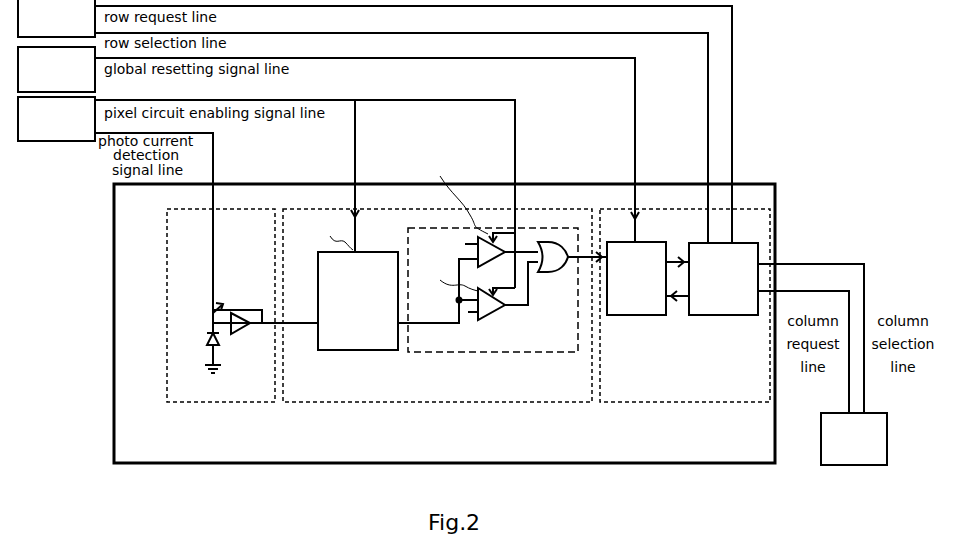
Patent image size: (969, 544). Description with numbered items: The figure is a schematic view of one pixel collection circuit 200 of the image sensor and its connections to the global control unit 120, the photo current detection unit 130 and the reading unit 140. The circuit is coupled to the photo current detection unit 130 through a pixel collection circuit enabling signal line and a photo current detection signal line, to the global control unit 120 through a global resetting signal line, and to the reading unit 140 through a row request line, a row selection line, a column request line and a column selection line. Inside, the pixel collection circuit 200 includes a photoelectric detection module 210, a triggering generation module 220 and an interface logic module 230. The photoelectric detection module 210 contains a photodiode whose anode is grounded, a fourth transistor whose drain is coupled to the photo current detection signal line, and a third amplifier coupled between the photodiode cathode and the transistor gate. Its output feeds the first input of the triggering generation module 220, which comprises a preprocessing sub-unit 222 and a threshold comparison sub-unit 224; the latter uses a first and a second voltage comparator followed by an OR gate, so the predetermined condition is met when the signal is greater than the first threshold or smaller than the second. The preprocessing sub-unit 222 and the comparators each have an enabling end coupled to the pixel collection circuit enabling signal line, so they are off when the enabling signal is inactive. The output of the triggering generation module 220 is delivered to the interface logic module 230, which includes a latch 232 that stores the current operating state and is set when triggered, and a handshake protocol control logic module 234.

The reading unit 140 is at (452, 232).
The global control unit 120 is at (56, 69).
The photo current detection unit 130 is at (56, 119).
The pixel collection circuit 200 is at (444, 323).
The photoelectric detection module 210 is at (242, 305).
The triggering generation module 220 is at (445, 282).
The preprocessing sub-unit 222 is at (358, 301).
The threshold comparison sub-unit 224 is at (502, 290).
The interface logic module 230 is at (685, 305).
The latch 232 is at (636, 278).
The handshake protocol control logic module 234 is at (723, 279).